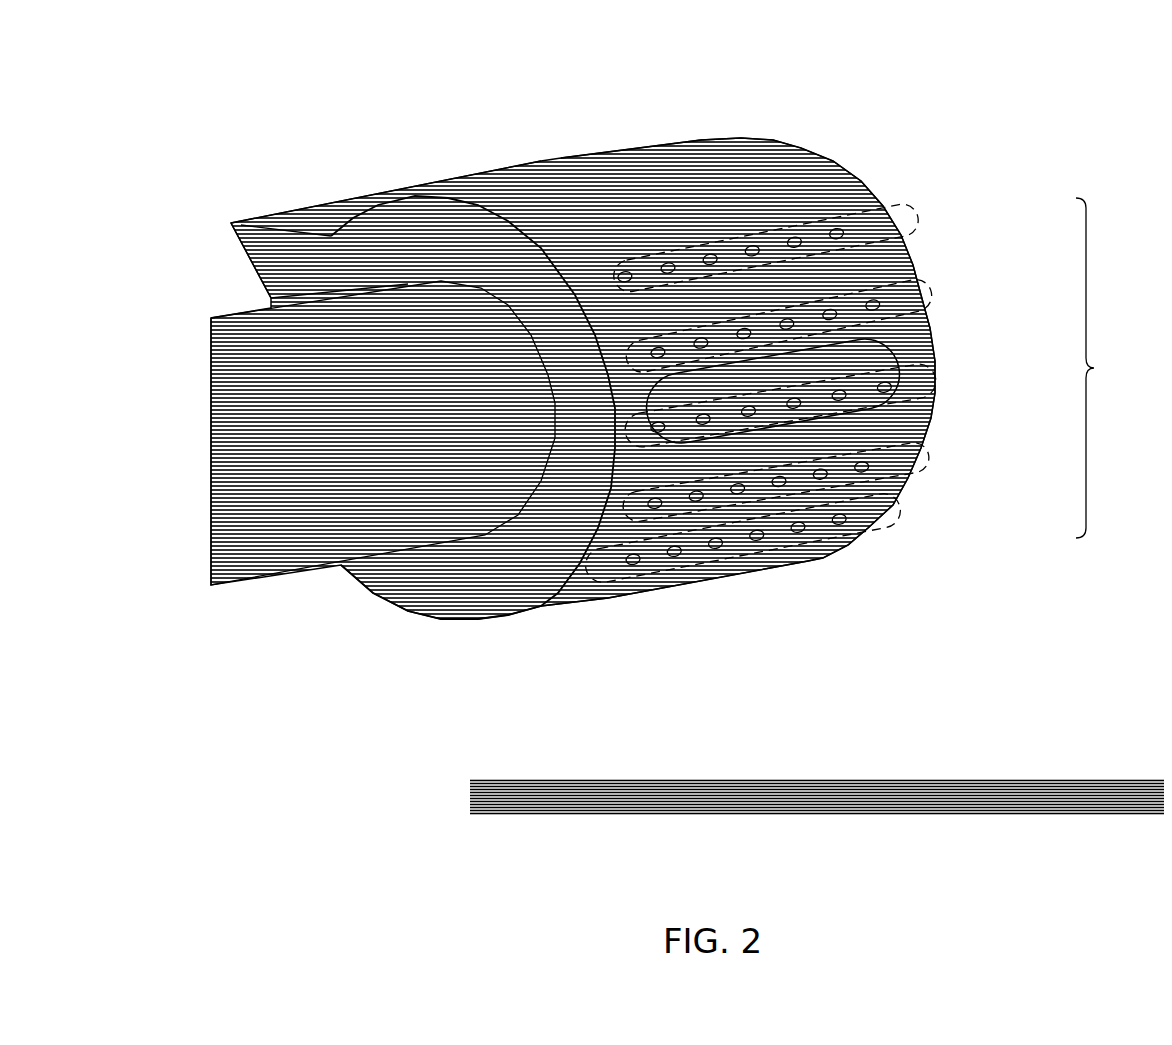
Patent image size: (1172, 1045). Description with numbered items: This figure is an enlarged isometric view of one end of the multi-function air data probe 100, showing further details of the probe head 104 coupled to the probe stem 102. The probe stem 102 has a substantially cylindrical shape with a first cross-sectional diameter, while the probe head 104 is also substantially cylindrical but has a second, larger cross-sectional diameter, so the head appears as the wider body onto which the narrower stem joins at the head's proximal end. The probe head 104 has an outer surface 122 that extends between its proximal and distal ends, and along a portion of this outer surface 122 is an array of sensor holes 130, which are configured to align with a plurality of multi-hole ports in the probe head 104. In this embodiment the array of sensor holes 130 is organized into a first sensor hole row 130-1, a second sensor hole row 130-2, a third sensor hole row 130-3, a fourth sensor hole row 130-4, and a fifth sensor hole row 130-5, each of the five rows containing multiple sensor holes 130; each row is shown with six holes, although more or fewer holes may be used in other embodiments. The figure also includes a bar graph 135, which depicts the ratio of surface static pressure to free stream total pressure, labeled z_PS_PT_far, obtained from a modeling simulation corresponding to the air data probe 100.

The multi-function air data probe 100 is at (513, 76).
The probe stem 102 is at (292, 565).
The probe head 104 is at (800, 139).
The outer surface 122 is at (726, 150).
The sensor holes 130 is at (622, 128).
The first sensor hole row 130-1 is at (907, 207).
The second sensor hole row 130-2 is at (930, 297).
The third sensor hole row 130-3 is at (935, 378).
The fourth sensor hole row 130-4 is at (922, 455).
The fifth sensor hole row 130-5 is at (905, 506).
The bar graph 135 is at (921, 765).